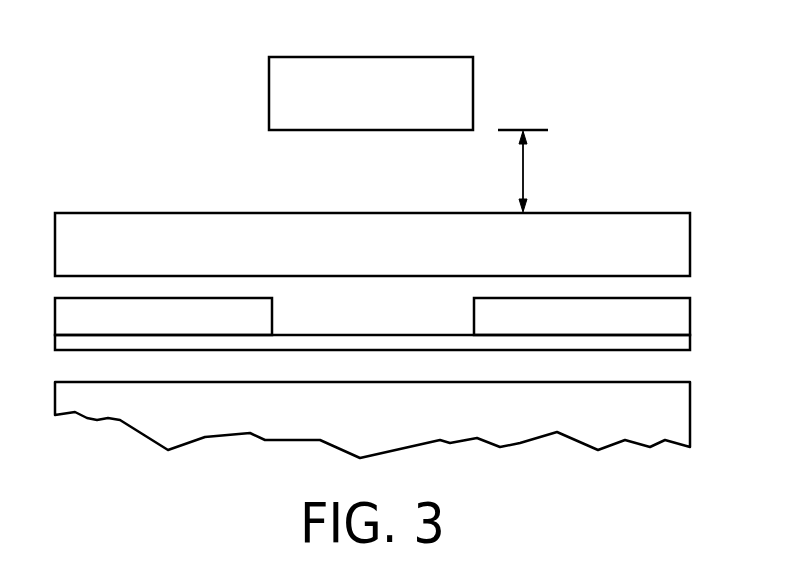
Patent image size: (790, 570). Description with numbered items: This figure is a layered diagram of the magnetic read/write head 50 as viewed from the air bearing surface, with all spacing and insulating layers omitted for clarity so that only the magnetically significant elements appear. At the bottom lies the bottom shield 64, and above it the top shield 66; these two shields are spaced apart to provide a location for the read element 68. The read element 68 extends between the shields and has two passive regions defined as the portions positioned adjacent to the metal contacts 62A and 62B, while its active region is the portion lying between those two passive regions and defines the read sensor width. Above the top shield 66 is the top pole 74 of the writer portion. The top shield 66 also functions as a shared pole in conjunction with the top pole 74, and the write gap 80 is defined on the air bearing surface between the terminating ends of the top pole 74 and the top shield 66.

The magnetic read/write head 50 is at (600, 190).
The metal contact 62A is at (140, 333).
The metal contact 62B is at (563, 333).
The bottom shield 64 is at (388, 428).
The top shield 66 is at (387, 254).
The read element 68 is at (678, 345).
The top pole 74 is at (352, 100).
The write gap 80 is at (529, 171).